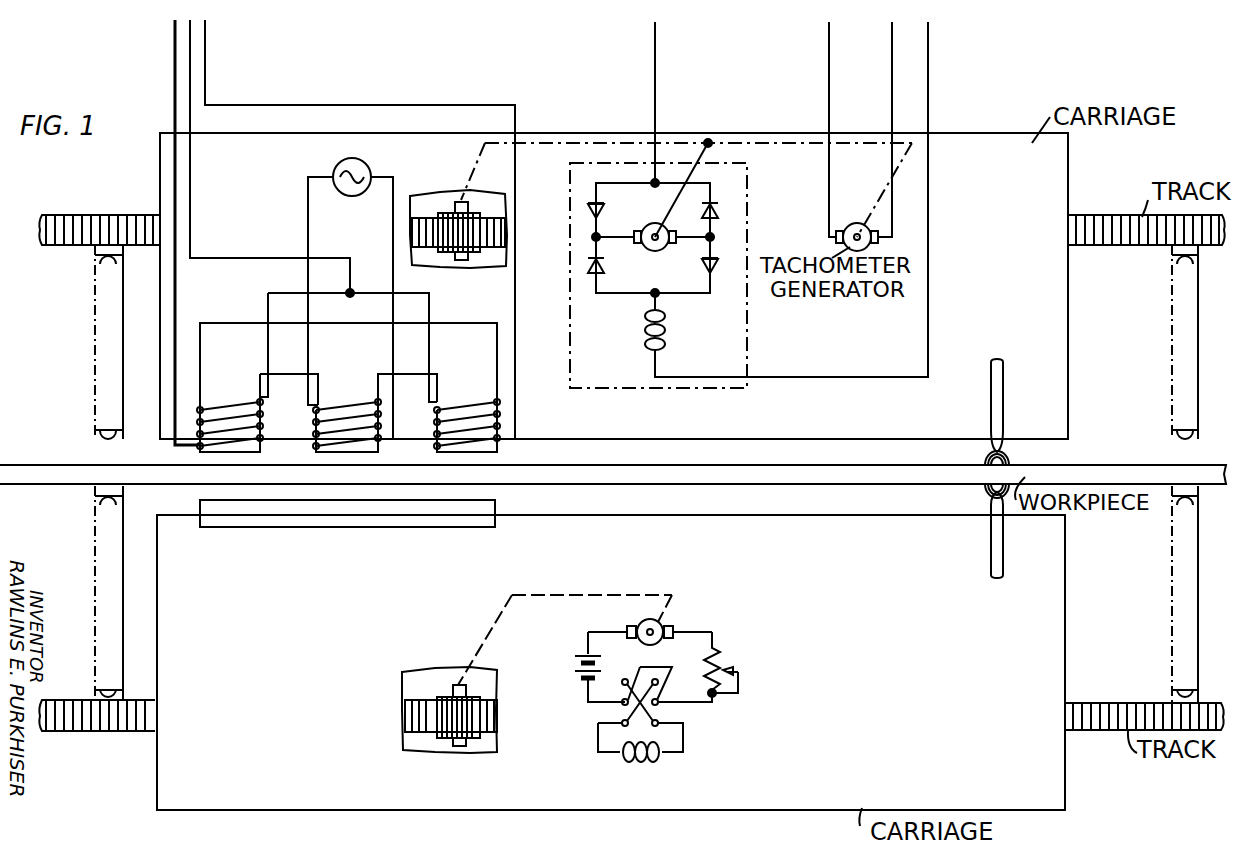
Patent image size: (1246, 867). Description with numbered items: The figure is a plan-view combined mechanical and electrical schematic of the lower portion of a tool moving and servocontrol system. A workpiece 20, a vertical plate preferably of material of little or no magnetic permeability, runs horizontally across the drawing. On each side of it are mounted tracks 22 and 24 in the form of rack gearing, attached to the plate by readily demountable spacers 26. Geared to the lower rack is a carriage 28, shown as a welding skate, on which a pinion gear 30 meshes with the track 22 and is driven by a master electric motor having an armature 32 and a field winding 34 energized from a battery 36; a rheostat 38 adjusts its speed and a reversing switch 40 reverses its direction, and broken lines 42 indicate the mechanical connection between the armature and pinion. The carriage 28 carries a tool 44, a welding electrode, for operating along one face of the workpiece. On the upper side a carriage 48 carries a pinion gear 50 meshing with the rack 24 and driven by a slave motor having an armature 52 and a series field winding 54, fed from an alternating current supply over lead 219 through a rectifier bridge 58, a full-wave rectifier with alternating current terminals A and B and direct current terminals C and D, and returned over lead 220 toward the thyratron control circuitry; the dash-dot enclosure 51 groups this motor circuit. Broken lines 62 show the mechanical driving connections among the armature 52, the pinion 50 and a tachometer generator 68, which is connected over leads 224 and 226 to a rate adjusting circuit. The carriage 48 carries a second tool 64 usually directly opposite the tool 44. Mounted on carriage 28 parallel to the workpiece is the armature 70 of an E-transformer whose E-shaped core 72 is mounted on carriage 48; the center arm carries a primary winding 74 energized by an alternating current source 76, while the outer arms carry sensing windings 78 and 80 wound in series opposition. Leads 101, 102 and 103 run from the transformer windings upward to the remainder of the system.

The workpiece 20 is at (1117, 465).
The track 22 is at (420, 707).
The track 24 is at (425, 222).
The spacers 26 is at (103, 357).
The carriage 28 is at (773, 802).
The pinion gear 30 is at (452, 723).
The armature 32 is at (657, 627).
The field winding 34 is at (627, 757).
The battery 36 is at (572, 660).
The rheostat 38 is at (727, 660).
The reversing switch 40 is at (658, 710).
The mechanical connection 42 is at (602, 595).
The tool 44 is at (1000, 552).
The carriage 48 is at (960, 143).
The pinion gear 50 is at (468, 238).
The motor drive circuit 51 is at (749, 224).
The armature 52 is at (655, 250).
The series field winding 54 is at (667, 332).
The rectifier bridge 58 is at (612, 287).
The broken lines 62 is at (583, 143).
The second tool 64 is at (1003, 390).
The tachometer generator 68 is at (823, 136).
The armature 70 is at (350, 518).
The E-shaped core 72 is at (380, 370).
The winding 74 is at (345, 400).
The alternating current source 76 is at (360, 167).
The sensing winding 78 is at (223, 400).
The sensing winding 80 is at (462, 403).
The supply lead 101 is at (175, 95).
The supply lead 102 is at (192, 118).
The supply lead 103 is at (207, 95).
The lead 219 is at (653, 92).
The lead 220 is at (930, 100).
The lead 224 is at (891, 113).
The lead 226 is at (828, 92).